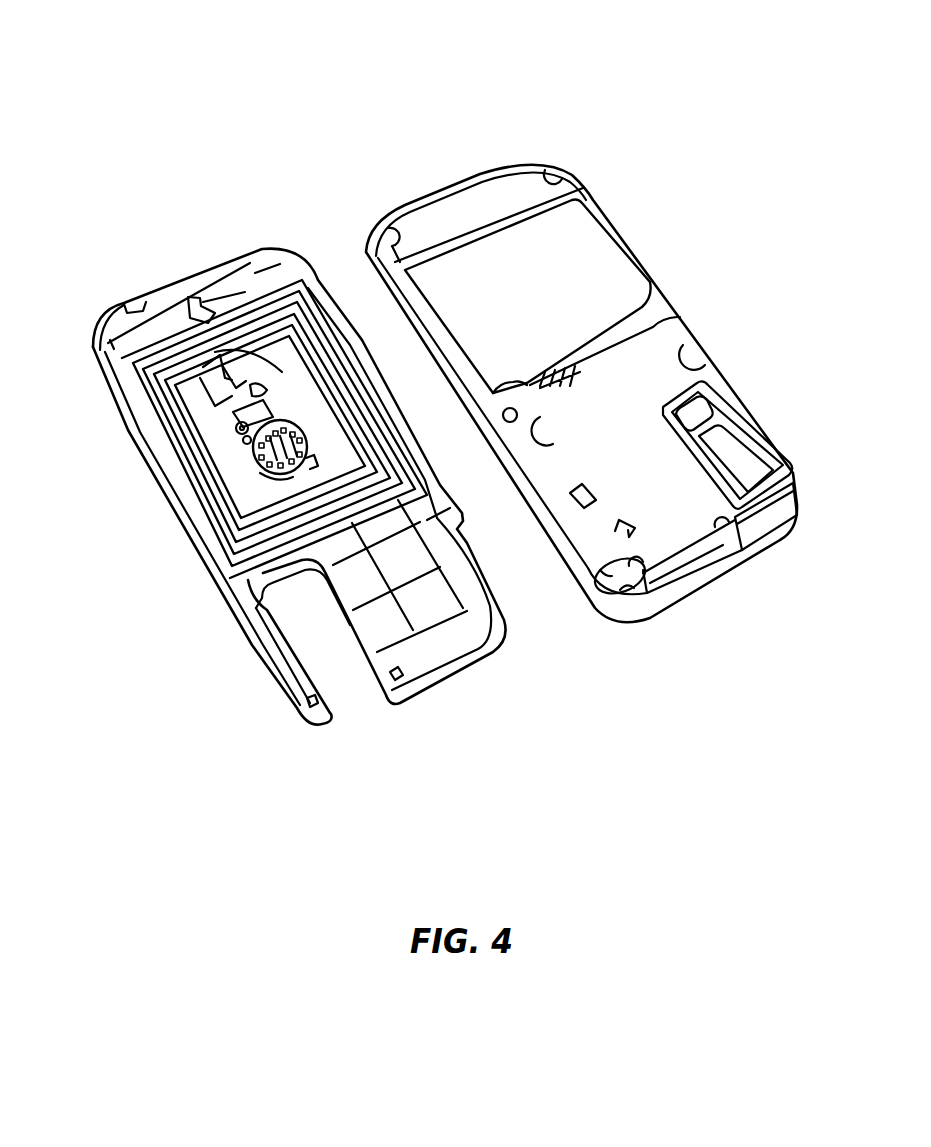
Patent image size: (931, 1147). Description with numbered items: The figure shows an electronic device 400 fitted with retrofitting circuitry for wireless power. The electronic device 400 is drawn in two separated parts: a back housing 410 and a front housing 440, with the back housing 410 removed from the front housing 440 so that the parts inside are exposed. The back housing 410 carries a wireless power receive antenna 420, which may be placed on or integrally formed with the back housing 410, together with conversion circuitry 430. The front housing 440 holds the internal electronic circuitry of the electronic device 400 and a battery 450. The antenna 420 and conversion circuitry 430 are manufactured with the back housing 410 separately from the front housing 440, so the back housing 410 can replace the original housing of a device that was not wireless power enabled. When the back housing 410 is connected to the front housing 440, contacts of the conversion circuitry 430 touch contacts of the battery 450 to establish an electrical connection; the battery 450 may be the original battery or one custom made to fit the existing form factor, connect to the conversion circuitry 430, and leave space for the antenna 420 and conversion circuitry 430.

The electronic device 400 is at (123, 74).
The back housing 410 is at (258, 662).
The wireless power receive antenna 420 is at (243, 303).
The conversion circuitry 430 is at (240, 436).
The front housing 440 is at (730, 379).
The battery 450 is at (600, 280).